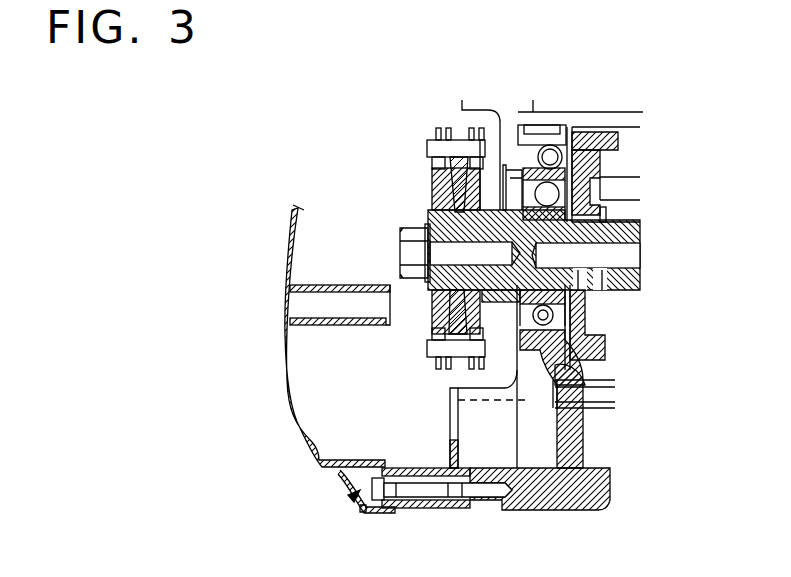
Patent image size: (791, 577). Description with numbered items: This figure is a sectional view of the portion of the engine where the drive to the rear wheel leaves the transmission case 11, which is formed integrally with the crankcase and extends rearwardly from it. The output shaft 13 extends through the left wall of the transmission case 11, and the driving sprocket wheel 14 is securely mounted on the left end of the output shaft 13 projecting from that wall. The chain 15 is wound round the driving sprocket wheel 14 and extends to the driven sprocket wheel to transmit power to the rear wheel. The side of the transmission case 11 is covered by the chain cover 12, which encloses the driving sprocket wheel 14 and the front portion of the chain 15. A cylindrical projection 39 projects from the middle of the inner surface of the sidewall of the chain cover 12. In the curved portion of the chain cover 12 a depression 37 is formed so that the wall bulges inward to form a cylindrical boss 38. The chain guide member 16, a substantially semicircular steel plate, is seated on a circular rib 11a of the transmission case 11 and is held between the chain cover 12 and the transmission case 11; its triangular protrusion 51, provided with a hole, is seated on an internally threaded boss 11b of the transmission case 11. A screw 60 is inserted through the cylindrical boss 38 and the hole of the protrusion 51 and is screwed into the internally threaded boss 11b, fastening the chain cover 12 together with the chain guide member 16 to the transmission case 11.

The transmission case 11 is at (550, 510).
The circular rib 11a is at (500, 438).
The internally threaded boss 11b is at (490, 510).
The chain cover 12 is at (290, 406).
The output shaft 13 is at (612, 280).
The driving sprocket wheel 14 is at (452, 190).
The chain 15 is at (430, 147).
The chain guide member 16 is at (451, 428).
The depression 37 is at (347, 500).
The cylindrical boss 38 is at (402, 508).
The cylindrical projection 39 is at (341, 285).
The triangular protrusion 51 is at (452, 510).
The screw 60 is at (346, 492).